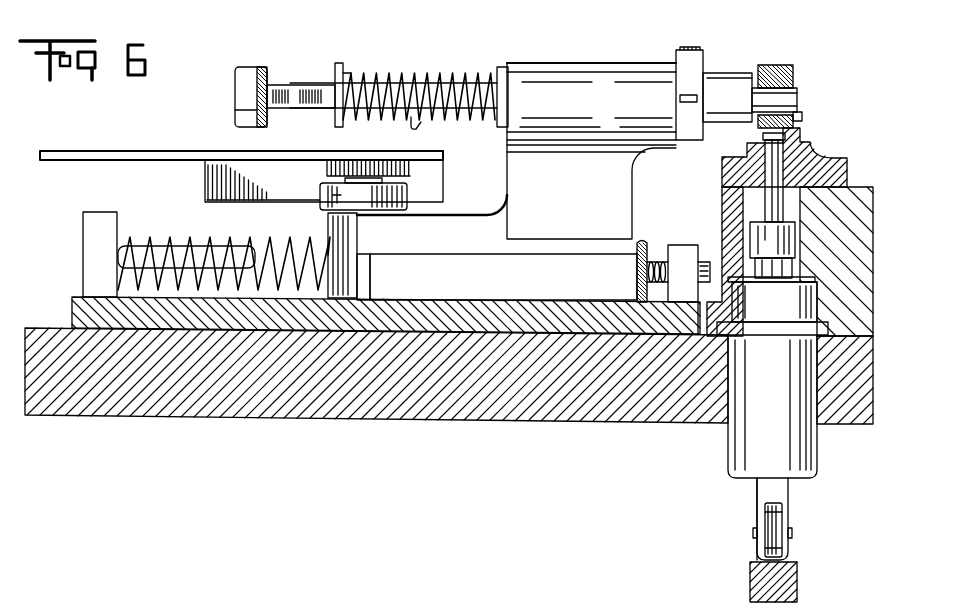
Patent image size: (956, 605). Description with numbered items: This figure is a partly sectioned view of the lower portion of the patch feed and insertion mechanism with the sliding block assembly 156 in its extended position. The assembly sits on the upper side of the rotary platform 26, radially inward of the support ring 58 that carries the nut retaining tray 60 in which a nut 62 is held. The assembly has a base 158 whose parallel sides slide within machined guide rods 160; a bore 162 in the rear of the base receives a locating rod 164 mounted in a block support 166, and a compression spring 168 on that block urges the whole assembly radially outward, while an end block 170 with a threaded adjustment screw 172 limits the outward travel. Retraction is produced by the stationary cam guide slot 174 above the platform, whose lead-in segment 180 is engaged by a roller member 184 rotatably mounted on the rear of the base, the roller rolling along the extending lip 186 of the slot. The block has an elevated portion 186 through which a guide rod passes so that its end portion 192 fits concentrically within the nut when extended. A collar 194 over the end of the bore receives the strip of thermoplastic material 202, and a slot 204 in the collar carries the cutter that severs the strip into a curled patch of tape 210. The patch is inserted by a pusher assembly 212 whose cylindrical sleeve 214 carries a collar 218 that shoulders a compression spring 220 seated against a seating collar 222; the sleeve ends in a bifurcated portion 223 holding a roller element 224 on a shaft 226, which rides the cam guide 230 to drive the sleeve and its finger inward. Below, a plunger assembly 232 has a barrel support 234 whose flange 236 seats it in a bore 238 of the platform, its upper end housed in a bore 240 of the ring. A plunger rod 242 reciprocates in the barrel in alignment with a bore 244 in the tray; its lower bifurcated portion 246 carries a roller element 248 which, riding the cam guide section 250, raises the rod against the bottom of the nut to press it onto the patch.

The platform 26 is at (58, 363).
The support ring 58 is at (867, 203).
The nut retaining tray 60 is at (822, 167).
The nut 62 is at (791, 72).
The sliding block assembly 156 is at (527, 177).
The base 158 is at (468, 278).
The guide rod 160 is at (637, 302).
The bore 162 is at (330, 258).
The locating rod 164 is at (157, 255).
The block support 166 is at (93, 227).
The compression spring 168 is at (283, 237).
The end block 170 is at (687, 255).
The threaded adjustment screw 172 is at (655, 260).
The cam guide slot 174 is at (100, 152).
The lead-in segment 180 is at (413, 182).
The roller member 184 is at (320, 188).
The elevated portion 186 is at (570, 80).
The end portion 192 is at (782, 94).
The collar 194 is at (713, 86).
The strip of thermoplastic material 202 is at (680, 50).
The slot 204 is at (690, 98).
The patch of tape 210 is at (776, 112).
The pusher assembly 212 is at (403, 66).
The cylindrical sleeve 214 is at (461, 75).
The collar 218 is at (343, 120).
The compression spring 220 is at (415, 120).
The seating collar 222 is at (497, 122).
The bifurcated portion 223 is at (278, 85).
The roller element 224 is at (257, 92).
The shaft 226 is at (292, 108).
The cam guide 230 is at (250, 112).
The plunger assembly 232 is at (698, 470).
The barrel support 234 is at (797, 445).
The flange 236 is at (813, 327).
The bore 238 is at (802, 412).
The bore 240 is at (817, 278).
The plunger rod 242 is at (763, 135).
The bore 244 is at (722, 170).
The bifurcated portion 246 is at (760, 543).
The roller element 248 is at (773, 523).
The cam guide section 250 is at (797, 577).